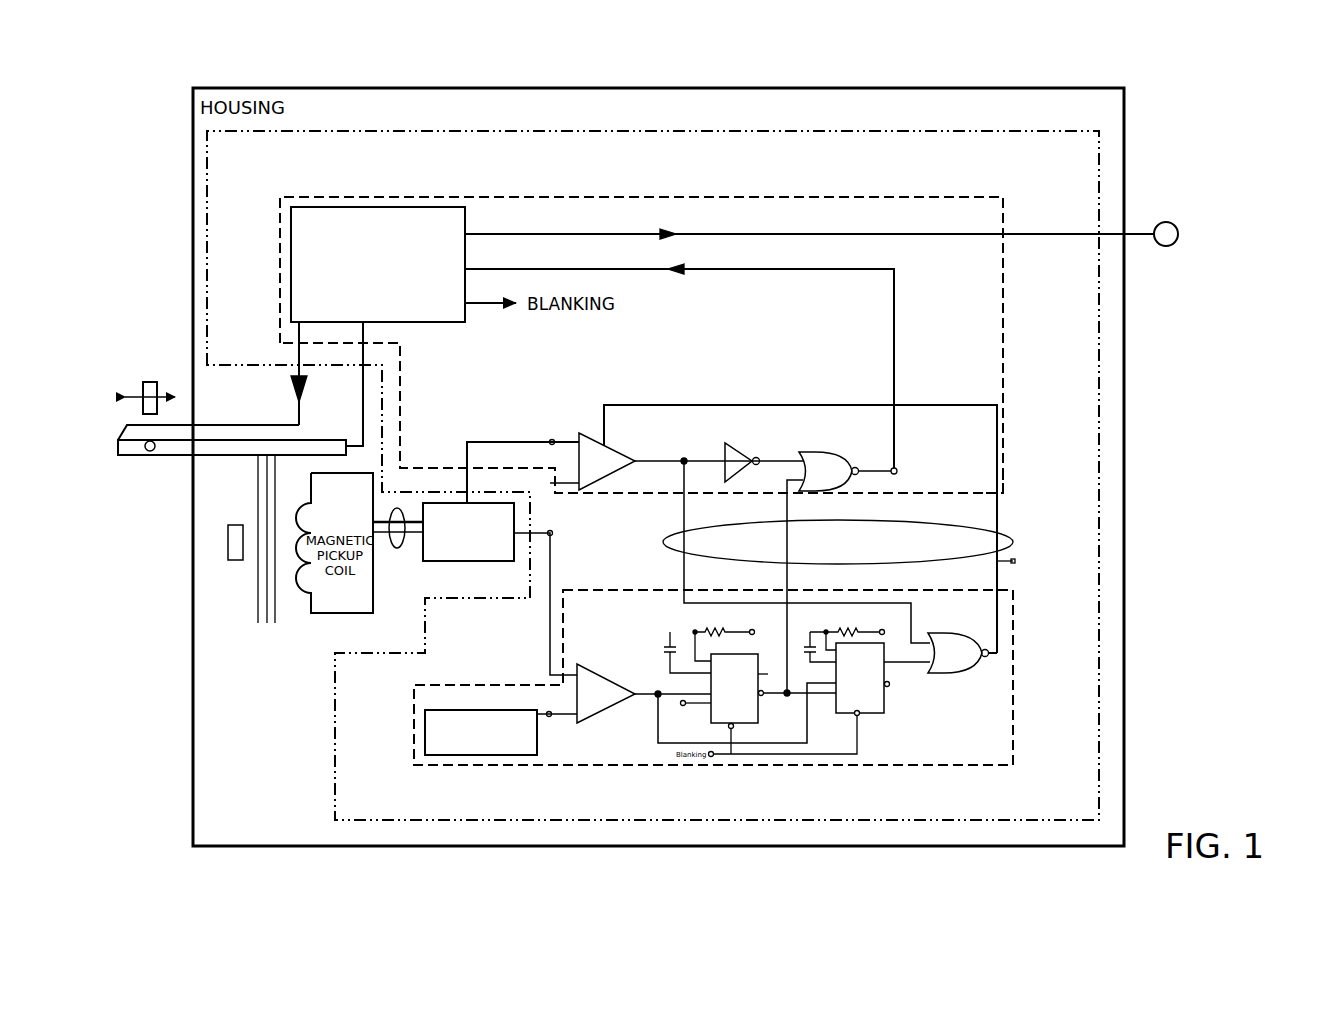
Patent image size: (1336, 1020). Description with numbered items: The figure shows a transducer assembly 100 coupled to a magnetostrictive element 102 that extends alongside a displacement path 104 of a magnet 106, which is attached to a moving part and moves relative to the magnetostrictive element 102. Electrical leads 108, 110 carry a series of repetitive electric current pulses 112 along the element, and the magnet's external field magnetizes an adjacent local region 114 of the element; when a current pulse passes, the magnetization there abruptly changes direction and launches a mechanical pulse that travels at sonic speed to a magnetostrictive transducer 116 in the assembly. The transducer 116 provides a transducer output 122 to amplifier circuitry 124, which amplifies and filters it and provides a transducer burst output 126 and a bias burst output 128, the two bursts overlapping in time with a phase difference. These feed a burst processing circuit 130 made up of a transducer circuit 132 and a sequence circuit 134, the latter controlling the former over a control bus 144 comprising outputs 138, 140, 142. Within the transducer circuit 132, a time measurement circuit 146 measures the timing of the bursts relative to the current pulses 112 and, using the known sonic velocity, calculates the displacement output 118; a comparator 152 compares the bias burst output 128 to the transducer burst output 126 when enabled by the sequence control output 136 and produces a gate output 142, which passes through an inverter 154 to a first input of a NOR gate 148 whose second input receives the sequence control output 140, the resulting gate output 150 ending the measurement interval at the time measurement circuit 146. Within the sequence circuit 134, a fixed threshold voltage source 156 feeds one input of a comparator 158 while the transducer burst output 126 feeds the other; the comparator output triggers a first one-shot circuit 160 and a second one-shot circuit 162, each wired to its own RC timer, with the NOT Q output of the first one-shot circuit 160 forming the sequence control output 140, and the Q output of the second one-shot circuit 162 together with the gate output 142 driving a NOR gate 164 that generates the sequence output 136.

The transducer assembly 100 is at (328, 74).
The magnetostrictive element 102 is at (178, 456).
The displacement path 104 is at (142, 397).
The magnet 106 is at (152, 380).
The electrical lead 108 is at (355, 440).
The electrical lead 110 is at (208, 425).
The electric current pulse 112 is at (293, 392).
The local region 114 is at (157, 452).
The magnetostrictive transducer 116 is at (278, 650).
The displacement output 118 is at (1020, 234).
The transducer output 122 is at (398, 548).
The amplifier circuitry 124 is at (512, 562).
The transducer burst output 126 is at (552, 505).
The bias burst output 128 is at (467, 440).
The burst processing circuit 130 is at (478, 130).
The transducer circuit 132 is at (715, 197).
The sequence circuit 134 is at (1013, 658).
The sequence control output 136 is at (1005, 500).
The output 138 is at (998, 565).
The sequence control output 140 is at (786, 590).
The gate output 142 is at (684, 585).
The control bus 144 is at (1013, 545).
The time measurement circuit 146 is at (336, 207).
The NOR gate 148 is at (820, 452).
The gate output 150 is at (895, 352).
The comparator 152 is at (608, 447).
The inverter 154 is at (735, 445).
The fixed threshold voltage source 156 is at (495, 757).
The comparator 158 is at (634, 708).
The first one-shot circuit 160 is at (711, 684).
The second one-shot circuit 162 is at (886, 708).
The NOR gate 164 is at (1000, 660).